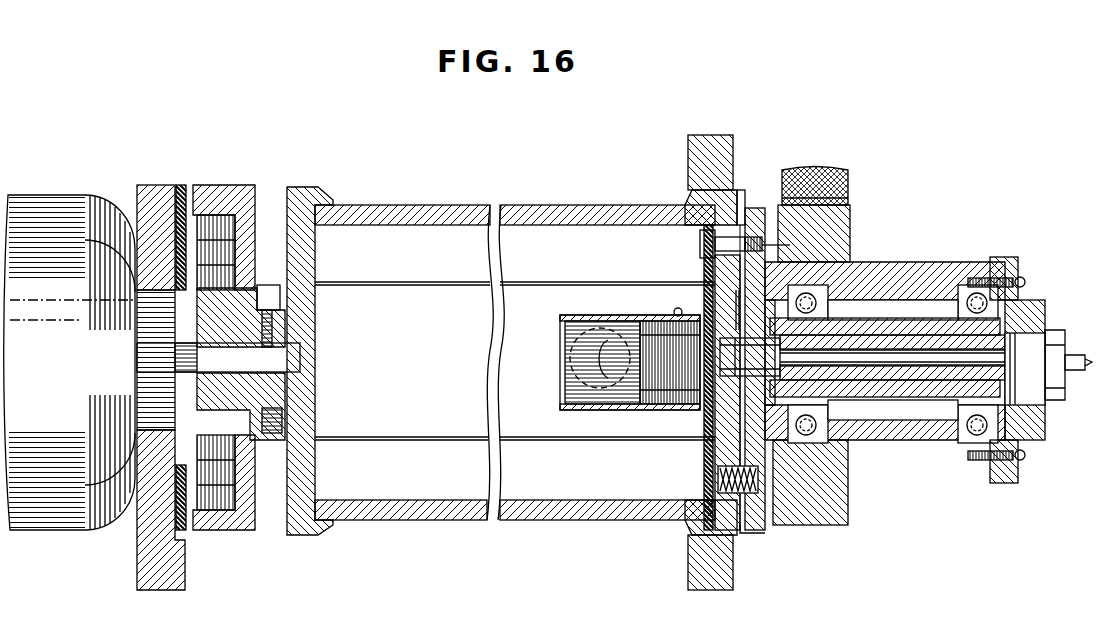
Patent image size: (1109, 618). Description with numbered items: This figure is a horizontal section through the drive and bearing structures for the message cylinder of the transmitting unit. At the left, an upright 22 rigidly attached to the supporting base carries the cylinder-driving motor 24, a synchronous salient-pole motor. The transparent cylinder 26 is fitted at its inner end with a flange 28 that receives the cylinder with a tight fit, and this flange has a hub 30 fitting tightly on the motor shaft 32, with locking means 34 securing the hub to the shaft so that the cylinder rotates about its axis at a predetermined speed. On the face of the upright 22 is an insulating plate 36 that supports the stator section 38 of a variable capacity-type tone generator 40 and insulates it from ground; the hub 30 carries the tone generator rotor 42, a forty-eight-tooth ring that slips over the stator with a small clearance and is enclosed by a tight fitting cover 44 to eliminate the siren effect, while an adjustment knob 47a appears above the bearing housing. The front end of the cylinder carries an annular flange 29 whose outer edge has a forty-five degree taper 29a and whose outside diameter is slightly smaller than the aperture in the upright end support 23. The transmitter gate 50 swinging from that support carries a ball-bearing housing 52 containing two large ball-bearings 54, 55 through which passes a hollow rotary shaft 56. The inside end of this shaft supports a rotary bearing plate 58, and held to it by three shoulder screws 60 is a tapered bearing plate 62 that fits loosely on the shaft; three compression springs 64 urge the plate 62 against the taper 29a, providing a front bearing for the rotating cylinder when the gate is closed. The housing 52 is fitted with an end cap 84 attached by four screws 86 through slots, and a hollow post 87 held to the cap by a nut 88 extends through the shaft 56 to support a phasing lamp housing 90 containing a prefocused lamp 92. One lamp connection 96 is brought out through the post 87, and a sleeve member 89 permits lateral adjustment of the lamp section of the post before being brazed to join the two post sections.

The upright 22 is at (150, 590).
The upright end support 23 is at (683, 580).
The cylinder-driving motor 24 is at (56, 366).
The transparent cylinder 26 is at (437, 205).
The flange 28 is at (305, 187).
The annular flange 29 is at (686, 205).
The taper 29a is at (741, 200).
The hub 30 is at (250, 395).
The motor shaft 32 is at (228, 366).
The locking means 34 is at (270, 342).
The insulating plate 36 is at (180, 185).
The stator section 38 is at (206, 512).
The tone generator 40 is at (229, 524).
The tone generator rotor 42 is at (213, 200).
The cover 44 is at (243, 185).
The knurled knob 47a is at (815, 170).
The transmitter gate 50 is at (852, 226).
The ball-bearing housing 52 is at (900, 262).
The ball-bearing 54 is at (818, 332).
The ball-bearing 55 is at (960, 326).
The hollow rotary shaft 56 is at (897, 330).
The rotary bearing plate 58 is at (745, 533).
The shoulder screws 60 is at (702, 243).
The tapered bearing plate 62 is at (704, 275).
The compression springs 64 is at (712, 300).
The end cap 84 is at (1003, 257).
The screws 86 is at (1026, 282).
The hollow post 87 is at (1045, 326).
The nut 88 is at (1060, 345).
The sleeve member 89 is at (918, 400).
The phasing lamp housing 90 is at (595, 410).
The lamp 92 is at (590, 403).
The connection 96 is at (820, 380).